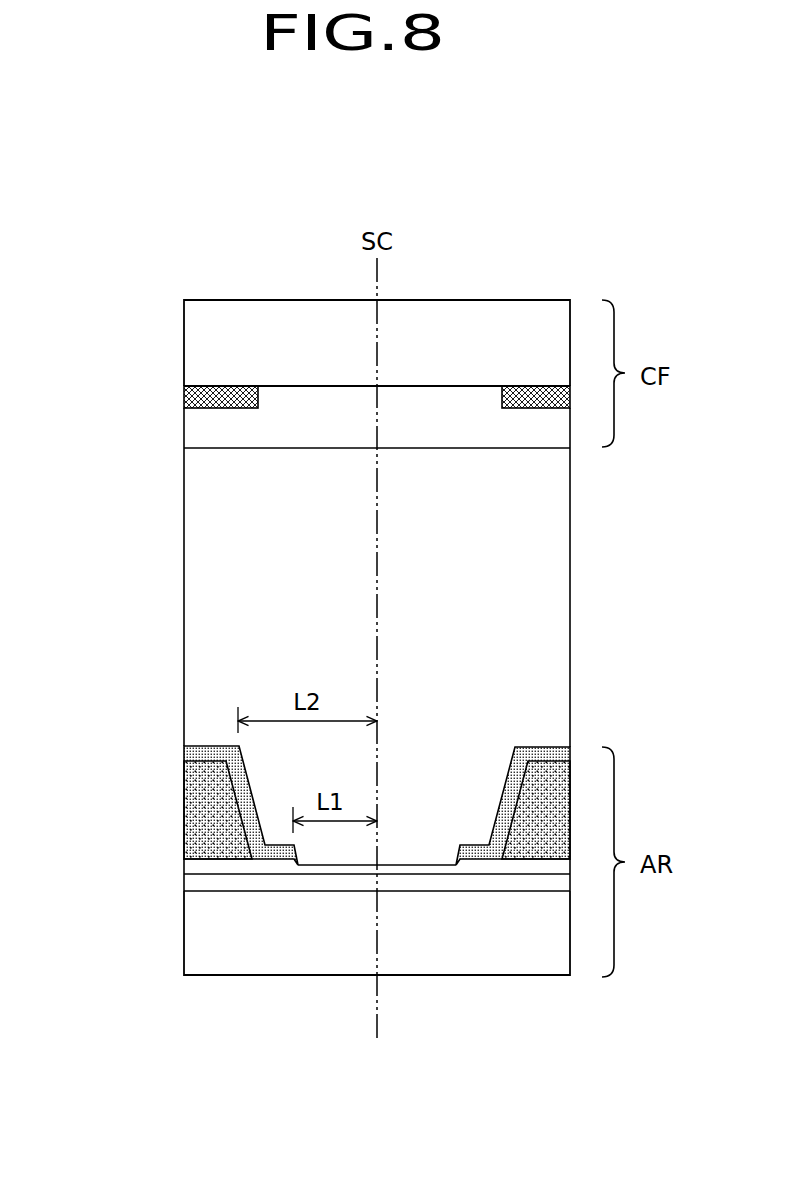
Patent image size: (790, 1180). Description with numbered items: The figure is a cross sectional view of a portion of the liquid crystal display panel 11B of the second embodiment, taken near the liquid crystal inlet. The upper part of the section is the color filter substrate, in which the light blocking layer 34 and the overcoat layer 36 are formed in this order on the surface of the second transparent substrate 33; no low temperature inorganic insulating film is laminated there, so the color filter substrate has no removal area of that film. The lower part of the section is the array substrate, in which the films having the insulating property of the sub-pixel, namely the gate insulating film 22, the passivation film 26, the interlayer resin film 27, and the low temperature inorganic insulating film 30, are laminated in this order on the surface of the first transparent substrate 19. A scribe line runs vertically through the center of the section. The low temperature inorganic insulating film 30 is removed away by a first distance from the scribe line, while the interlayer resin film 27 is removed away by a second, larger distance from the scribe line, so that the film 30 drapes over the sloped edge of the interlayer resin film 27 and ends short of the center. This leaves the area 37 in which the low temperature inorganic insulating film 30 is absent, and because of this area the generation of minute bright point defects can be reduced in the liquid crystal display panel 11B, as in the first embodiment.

The liquid crystal display panel 11B is at (118, 238).
The first transparent substrate 19 is at (193, 948).
The gate insulating film 22 is at (195, 883).
The passivation film 26 is at (195, 867).
The interlayer resin film 27 is at (193, 783).
The low temperature inorganic insulating film 30 is at (190, 753).
The second transparent substrate 33 is at (198, 322).
The light blocking layer 34 is at (192, 397).
The overcoat layer 36 is at (195, 433).
The area in which the low temperature inorganic insulating film is absent 37 is at (425, 845).